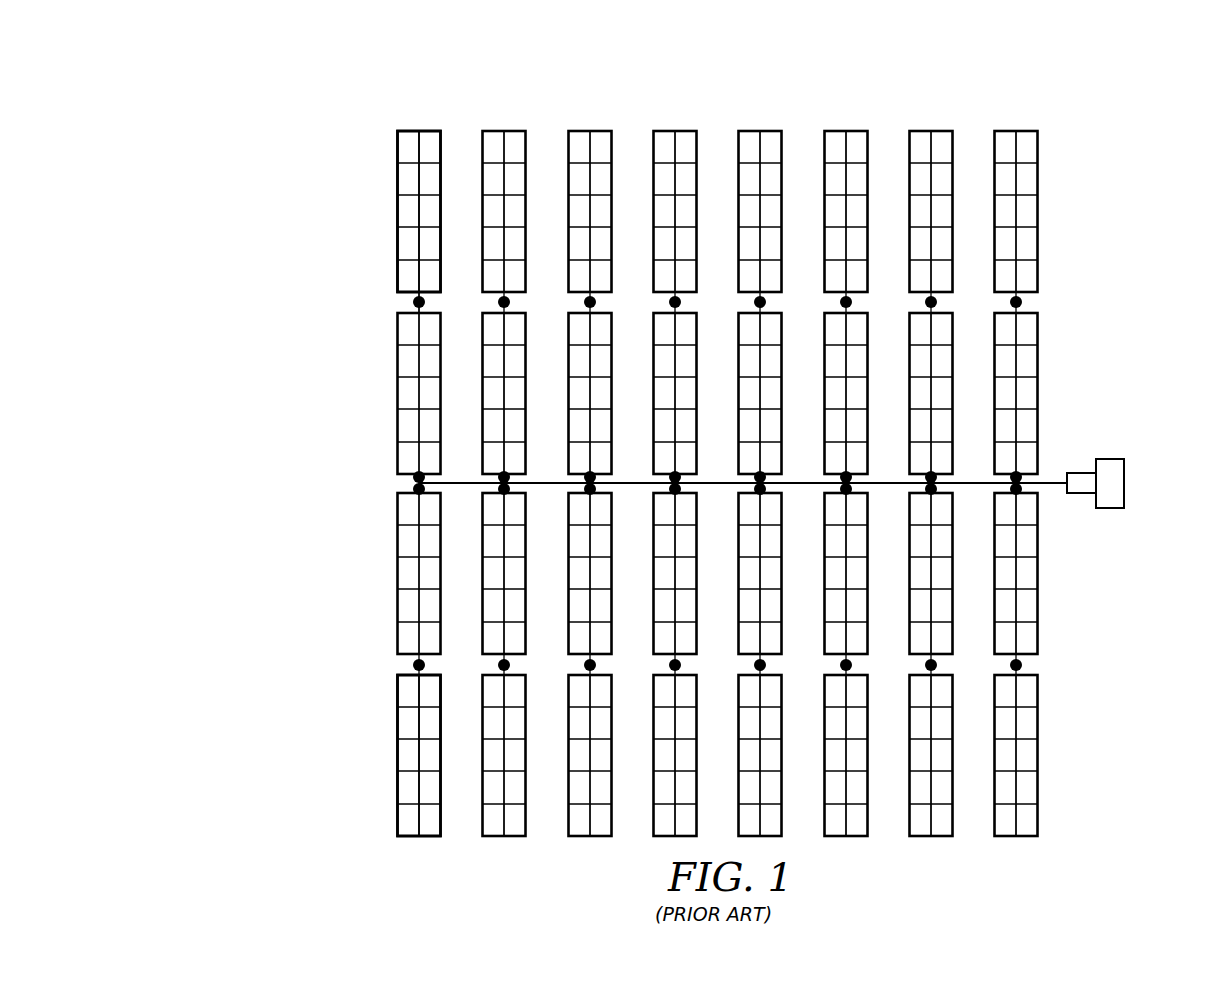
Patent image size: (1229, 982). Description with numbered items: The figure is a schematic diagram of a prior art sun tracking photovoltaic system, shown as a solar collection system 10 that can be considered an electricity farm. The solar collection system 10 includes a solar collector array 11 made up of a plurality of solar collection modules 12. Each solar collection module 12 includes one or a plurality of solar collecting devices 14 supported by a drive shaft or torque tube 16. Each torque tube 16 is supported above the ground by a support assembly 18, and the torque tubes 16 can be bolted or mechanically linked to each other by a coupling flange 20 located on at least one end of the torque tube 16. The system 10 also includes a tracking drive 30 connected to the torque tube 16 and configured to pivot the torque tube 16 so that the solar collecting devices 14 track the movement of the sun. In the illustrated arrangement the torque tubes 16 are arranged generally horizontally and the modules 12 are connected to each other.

The solar collection system 10 is at (212, 86).
The solar collector array 11 is at (268, 153).
The solar collection module 12 is at (396, 197).
The solar collecting device 14 is at (408, 140).
The torque tube 16 is at (421, 140).
The support assembly 18 is at (384, 292).
The coupling flange 20 is at (414, 302).
The tracking drive 30 is at (1134, 468).